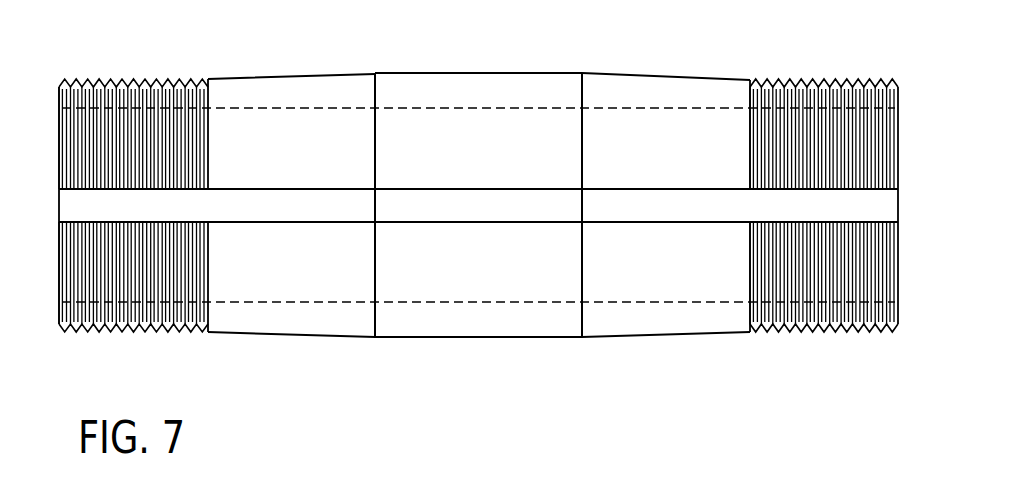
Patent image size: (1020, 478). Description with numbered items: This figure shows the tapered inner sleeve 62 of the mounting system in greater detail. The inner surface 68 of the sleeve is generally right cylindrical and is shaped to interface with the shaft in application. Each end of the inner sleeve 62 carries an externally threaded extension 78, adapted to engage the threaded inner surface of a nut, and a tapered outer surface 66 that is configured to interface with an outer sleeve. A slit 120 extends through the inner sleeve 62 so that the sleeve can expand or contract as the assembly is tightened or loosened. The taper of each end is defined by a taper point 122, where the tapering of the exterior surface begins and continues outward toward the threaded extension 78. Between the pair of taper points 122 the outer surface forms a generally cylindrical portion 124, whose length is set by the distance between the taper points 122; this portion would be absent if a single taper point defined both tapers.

The tapered inner sleeve 62 is at (348, 363).
The tapered outer surface 66 is at (280, 77).
The inner surface 68 is at (470, 302).
The externally threaded extension 78 is at (102, 300).
The slit 120 is at (757, 203).
The taper point 122 is at (377, 120).
The cylindrical portion 124 is at (474, 72).